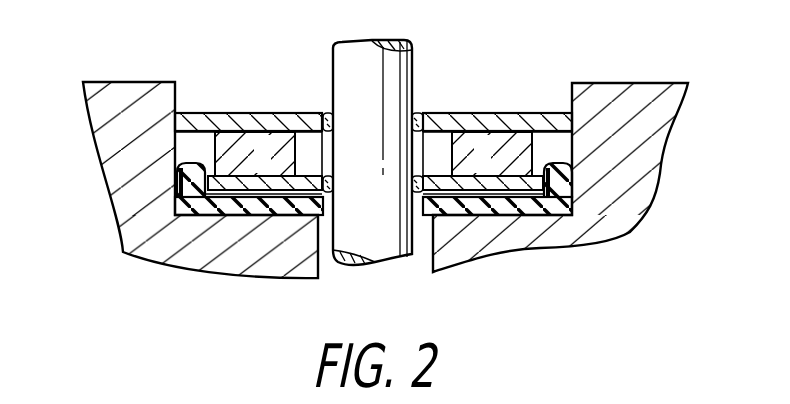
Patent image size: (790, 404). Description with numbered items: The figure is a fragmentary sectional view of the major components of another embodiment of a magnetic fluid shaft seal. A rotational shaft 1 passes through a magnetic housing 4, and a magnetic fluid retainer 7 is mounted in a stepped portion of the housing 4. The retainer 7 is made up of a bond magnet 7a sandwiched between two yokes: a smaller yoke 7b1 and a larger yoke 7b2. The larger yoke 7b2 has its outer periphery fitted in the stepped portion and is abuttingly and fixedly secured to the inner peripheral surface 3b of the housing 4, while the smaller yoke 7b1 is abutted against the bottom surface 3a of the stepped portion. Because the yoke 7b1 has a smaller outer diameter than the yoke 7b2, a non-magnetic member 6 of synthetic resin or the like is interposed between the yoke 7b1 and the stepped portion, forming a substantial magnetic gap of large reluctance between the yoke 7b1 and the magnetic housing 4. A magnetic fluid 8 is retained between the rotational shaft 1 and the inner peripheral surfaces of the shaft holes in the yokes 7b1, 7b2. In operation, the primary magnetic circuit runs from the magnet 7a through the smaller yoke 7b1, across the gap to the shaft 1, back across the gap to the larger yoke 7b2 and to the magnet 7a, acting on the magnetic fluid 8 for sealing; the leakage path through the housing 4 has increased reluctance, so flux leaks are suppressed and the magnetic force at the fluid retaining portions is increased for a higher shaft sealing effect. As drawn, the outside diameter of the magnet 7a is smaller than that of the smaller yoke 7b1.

The rotational shaft 1 is at (414, 60).
The bottom surface of the stepped portion 3a is at (517, 220).
The inner peripheral surface of the stepped portion 3b is at (577, 153).
The magnetic housing 4 is at (153, 243).
The non-magnetic member 6 is at (212, 210).
The magnetic fluid retainer 7 is at (304, 125).
The magnet 7a is at (217, 142).
The smaller yoke 7b1 is at (193, 181).
The larger yoke 7b2 is at (217, 111).
The magnetic fluid 8 is at (417, 113).